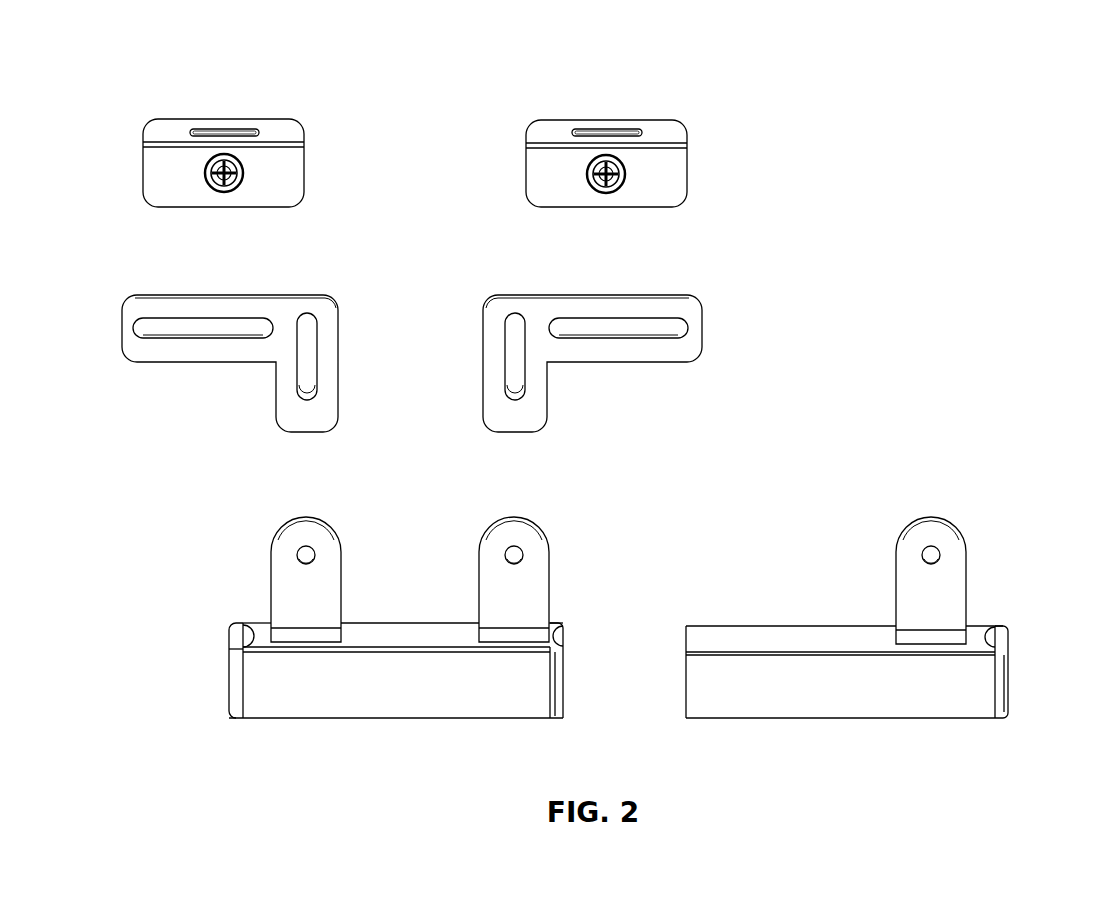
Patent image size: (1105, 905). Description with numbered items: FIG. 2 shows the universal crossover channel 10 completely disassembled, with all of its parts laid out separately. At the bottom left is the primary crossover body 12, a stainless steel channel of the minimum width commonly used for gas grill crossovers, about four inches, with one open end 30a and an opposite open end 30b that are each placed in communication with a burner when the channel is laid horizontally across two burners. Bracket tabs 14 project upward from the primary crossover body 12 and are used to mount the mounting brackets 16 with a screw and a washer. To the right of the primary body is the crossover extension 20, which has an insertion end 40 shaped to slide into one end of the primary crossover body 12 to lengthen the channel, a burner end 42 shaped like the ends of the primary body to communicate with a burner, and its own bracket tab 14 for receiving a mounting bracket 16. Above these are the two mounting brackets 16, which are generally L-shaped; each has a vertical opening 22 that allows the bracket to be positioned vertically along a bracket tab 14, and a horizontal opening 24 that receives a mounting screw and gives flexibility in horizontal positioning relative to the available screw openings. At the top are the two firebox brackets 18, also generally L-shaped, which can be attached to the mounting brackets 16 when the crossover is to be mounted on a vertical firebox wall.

The universal crossover channel 10 is at (862, 80).
The primary crossover body 12 is at (399, 677).
The bracket tabs 14 is at (293, 605).
The mounting brackets 16 is at (412, 397).
The firebox brackets 18 is at (163, 129).
The crossover extension 20 is at (847, 672).
The vertical opening 22 is at (310, 343).
The horizontal opening 24 is at (244, 330).
The end of primary crossover body 30a is at (230, 677).
The opposite end of primary crossover body 30b is at (565, 700).
The insertion end 40 is at (685, 683).
The burner end 42 is at (1008, 678).